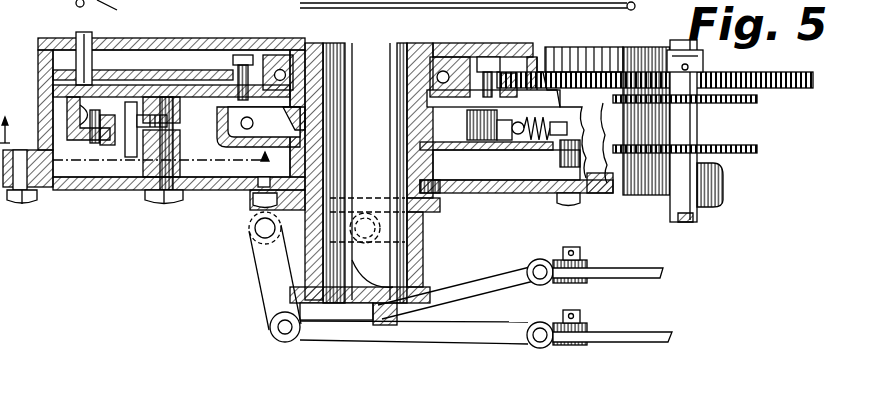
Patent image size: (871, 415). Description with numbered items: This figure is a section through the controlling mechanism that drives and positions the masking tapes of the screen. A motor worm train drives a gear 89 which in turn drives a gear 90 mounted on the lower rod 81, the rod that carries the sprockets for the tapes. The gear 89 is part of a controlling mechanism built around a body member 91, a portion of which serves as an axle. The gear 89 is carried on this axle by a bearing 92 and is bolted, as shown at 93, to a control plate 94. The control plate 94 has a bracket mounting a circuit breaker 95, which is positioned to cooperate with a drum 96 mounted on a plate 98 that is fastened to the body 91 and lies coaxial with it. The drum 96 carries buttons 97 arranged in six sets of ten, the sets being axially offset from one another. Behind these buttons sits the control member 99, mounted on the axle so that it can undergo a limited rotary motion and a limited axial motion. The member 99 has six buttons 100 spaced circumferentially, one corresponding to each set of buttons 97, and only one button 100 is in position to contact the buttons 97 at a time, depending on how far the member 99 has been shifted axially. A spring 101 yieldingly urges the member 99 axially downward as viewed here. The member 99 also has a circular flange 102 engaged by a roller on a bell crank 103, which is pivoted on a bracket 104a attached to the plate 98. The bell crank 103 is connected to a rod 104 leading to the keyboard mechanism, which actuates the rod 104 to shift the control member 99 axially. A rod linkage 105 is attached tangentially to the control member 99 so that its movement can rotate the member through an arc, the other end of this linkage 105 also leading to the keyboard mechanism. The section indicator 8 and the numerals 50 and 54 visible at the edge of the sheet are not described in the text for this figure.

The section line indicator 8 is at (170, 164).
The link 50 is at (111, 12).
The lever 54 is at (51, 6).
The rod 81 is at (687, 130).
The gear 89 is at (147, 72).
The gear 90 is at (793, 88).
The body member 91 is at (197, 43).
The bearing 92 is at (310, 43).
The bolt 93 is at (253, 57).
The control plate 94 is at (60, 92).
The circuit breaker 95 is at (115, 153).
The drum 96 is at (194, 165).
The buttons 97 is at (557, 140).
The plate 98 is at (55, 192).
The control member 99 is at (470, 150).
The buttons 100 is at (508, 142).
The spring 101 is at (325, 125).
The circular flange 102 is at (437, 213).
The bell crank 103 is at (270, 275).
The rod 104 is at (473, 330).
The bracket 104a is at (253, 207).
The rod linkage 105 is at (483, 288).